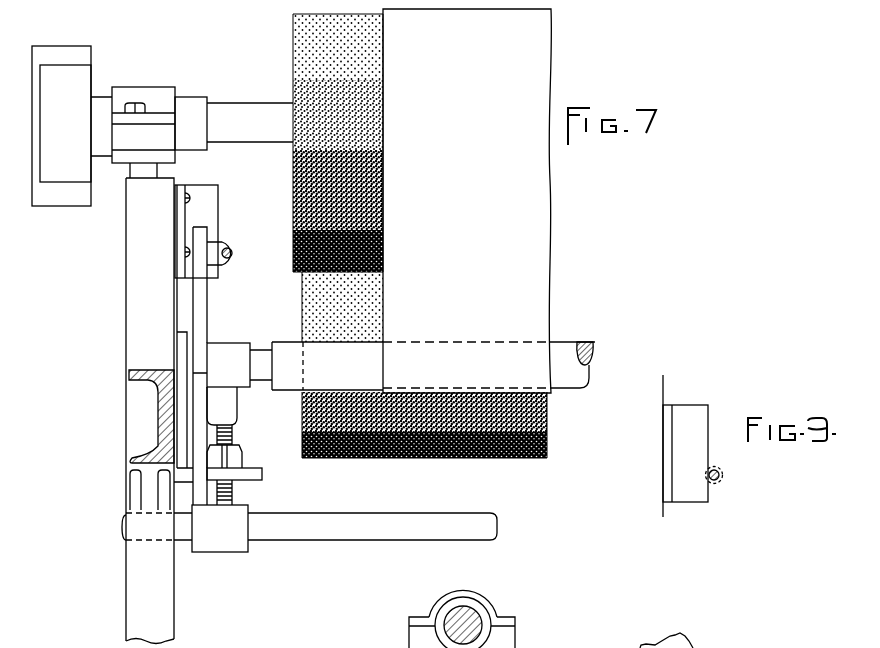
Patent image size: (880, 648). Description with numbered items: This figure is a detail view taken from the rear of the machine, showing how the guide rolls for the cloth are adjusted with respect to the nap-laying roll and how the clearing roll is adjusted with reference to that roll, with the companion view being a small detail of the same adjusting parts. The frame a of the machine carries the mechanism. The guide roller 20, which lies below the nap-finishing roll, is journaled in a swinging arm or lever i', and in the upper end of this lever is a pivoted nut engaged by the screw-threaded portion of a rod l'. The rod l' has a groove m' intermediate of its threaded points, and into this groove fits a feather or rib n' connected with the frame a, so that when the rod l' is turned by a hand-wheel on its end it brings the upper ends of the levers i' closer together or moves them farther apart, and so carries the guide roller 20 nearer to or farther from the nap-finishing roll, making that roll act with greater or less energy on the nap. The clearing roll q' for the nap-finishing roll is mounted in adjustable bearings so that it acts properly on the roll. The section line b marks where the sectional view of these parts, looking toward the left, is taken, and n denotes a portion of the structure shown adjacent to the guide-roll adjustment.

In FIG. 7, the frame a is at (157, 409).
In FIG. 7, the section line b is at (275, 578).
In FIG. 7, the abrasive block n is at (338, 136).
In FIG. 7, the feather n' is at (196, 231).
In FIG. 9, the feather n' is at (685, 453).
In FIG. 7, the rod l' is at (224, 241).
In FIG. 9, the rod l' is at (731, 476).
In FIG. 9, the groove m' is at (730, 467).
In FIG. 7, the swinging arm i' is at (213, 366).
In FIG. 7, the clearing roll q' is at (413, 365).
In FIG. 7, the guide roller 20 is at (401, 366).